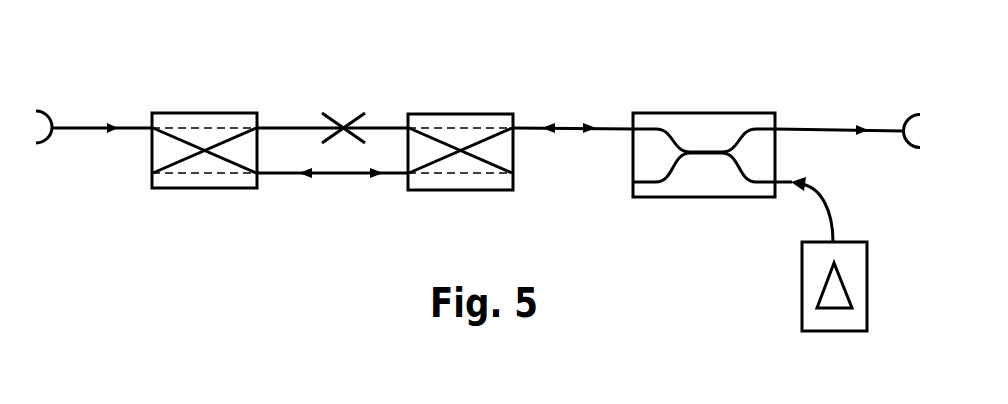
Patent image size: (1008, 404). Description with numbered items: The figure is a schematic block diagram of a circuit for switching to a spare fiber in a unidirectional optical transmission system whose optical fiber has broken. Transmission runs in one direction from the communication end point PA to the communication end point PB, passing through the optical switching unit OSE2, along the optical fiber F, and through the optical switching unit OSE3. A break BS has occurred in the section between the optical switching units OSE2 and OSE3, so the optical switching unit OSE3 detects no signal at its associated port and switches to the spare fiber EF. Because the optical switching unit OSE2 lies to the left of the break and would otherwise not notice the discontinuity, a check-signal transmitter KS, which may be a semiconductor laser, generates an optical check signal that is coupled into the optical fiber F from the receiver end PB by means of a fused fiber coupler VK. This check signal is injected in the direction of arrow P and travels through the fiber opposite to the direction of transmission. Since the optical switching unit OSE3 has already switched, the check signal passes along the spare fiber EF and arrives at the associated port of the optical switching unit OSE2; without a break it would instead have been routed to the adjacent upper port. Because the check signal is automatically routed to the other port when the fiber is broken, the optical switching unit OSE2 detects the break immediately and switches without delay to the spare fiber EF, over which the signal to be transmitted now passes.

The communication end point PA is at (77, 106).
The communication end point PB is at (927, 84).
The optical switching unit OSE2 is at (234, 116).
The optical switching unit OSE3 is at (490, 117).
The break BS is at (381, 76).
The optical fiber F is at (306, 191).
The spare fiber EF is at (342, 208).
The fused fiber coupler VK is at (727, 121).
The arrow P is at (833, 206).
The check-signal transmitter KS is at (769, 279).